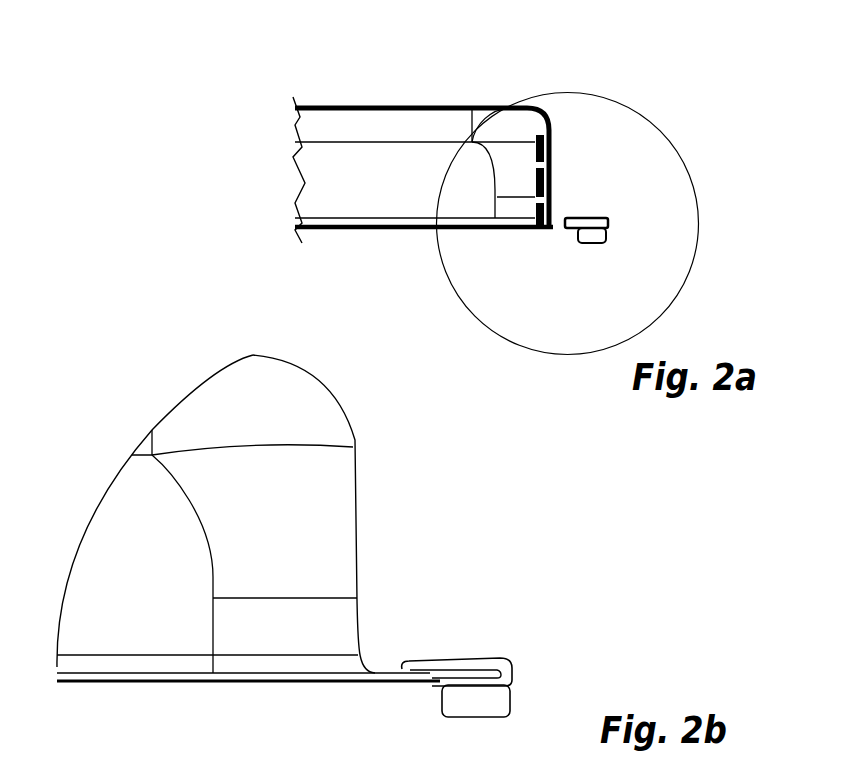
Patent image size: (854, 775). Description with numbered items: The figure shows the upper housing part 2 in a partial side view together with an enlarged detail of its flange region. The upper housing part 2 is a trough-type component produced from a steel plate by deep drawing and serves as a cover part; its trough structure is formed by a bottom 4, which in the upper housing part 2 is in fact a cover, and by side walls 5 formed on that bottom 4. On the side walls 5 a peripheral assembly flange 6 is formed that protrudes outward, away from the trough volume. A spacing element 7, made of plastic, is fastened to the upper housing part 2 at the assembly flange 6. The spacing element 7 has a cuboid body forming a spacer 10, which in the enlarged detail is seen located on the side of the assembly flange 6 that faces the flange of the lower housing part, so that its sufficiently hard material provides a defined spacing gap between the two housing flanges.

In FIG. 2a, the upper housing part 2 is at (322, 82).
In FIG. 2b, the upper housing part 2 is at (157, 394).
In FIG. 2a, the bottom 4 is at (427, 106).
In FIG. 2a, the side walls 5 is at (602, 73).
In FIG. 2b, the side walls 5 is at (425, 457).
In FIG. 2b, the assembly flange 6 is at (388, 667).
In FIG. 2a, the spacing element 7 is at (609, 217).
In FIG. 2b, the spacing element 7 is at (515, 659).
In FIG. 2b, the spacer 10 is at (493, 698).